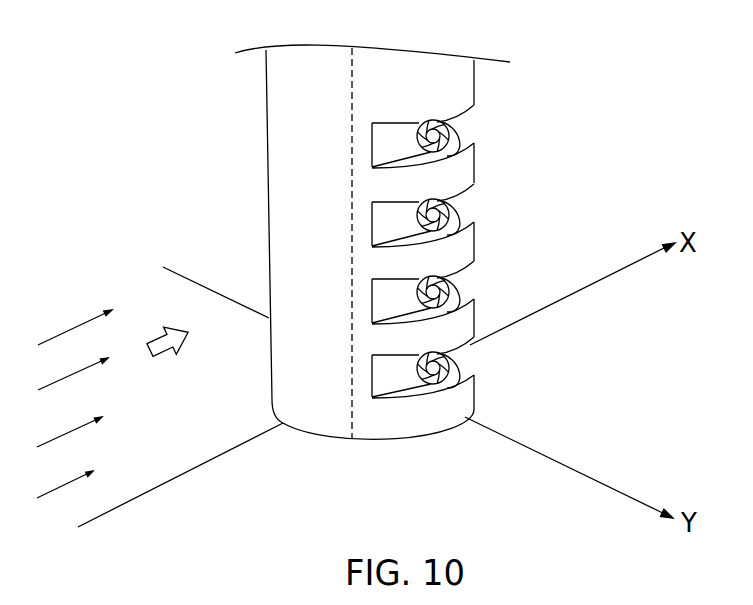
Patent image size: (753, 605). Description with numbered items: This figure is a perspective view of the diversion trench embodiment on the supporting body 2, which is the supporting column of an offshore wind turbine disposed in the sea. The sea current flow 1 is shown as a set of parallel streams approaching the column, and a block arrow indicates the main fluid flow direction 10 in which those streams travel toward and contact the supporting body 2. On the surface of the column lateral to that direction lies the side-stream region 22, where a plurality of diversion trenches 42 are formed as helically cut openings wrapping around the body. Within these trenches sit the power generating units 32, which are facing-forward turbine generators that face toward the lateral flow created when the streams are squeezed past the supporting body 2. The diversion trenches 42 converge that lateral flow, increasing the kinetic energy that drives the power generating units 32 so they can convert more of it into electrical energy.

The sea current flow 1 is at (63, 332).
The main fluid flow direction 10 is at (167, 328).
The supporting body 2 is at (277, 78).
The side-stream region 22 is at (420, 68).
The diversion trench 42 is at (463, 118).
The power generating unit 32 is at (450, 200).